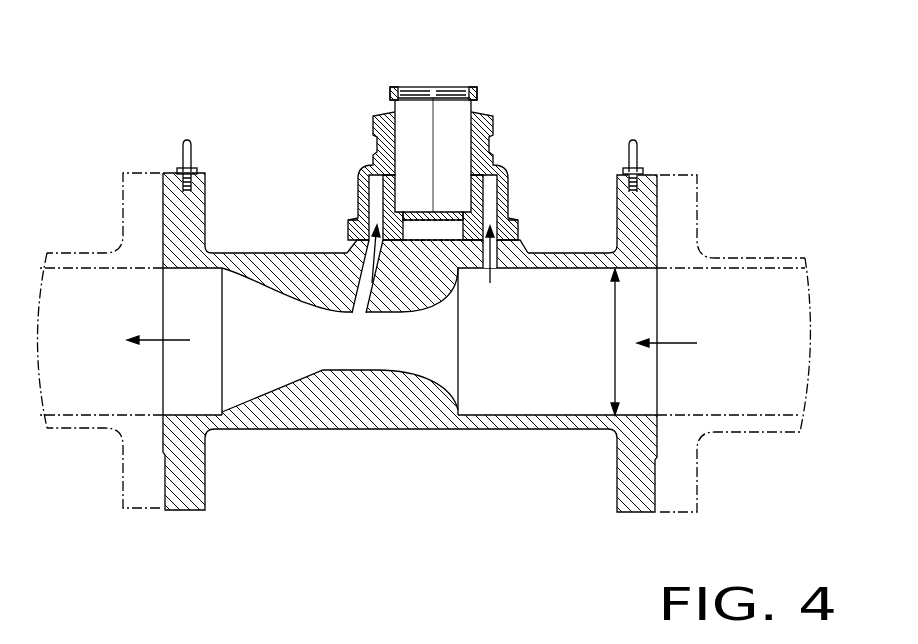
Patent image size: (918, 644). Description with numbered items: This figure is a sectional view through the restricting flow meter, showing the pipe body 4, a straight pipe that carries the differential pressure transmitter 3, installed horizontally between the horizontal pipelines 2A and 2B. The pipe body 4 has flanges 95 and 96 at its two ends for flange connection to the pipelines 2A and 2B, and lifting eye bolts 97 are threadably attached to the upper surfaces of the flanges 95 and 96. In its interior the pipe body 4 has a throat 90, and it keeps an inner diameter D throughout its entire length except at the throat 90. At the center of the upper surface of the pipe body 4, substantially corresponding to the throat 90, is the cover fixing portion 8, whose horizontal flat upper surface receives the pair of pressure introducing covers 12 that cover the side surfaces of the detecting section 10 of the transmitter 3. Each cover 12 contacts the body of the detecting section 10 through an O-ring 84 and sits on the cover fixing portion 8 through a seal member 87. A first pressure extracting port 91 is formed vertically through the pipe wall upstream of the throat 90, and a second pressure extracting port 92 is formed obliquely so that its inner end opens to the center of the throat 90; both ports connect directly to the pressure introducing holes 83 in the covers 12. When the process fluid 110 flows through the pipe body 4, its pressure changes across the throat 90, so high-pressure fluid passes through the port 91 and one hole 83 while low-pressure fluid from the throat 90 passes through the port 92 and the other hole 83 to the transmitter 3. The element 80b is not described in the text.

The pipeline 2A is at (750, 257).
The pipeline 2B is at (70, 250).
The differential pressure transmitter 3 is at (438, 133).
The pipe body 4 is at (530, 432).
The cover fixing portion 8 is at (537, 268).
The detecting section 10 is at (434, 169).
The pressure introducing cover 12 is at (395, 87).
The diaphragm 80b is at (440, 87).
The pressure introducing hole 83 is at (376, 195).
The O-ring 84 is at (390, 108).
The seal member 87 is at (354, 230).
The throat 90 is at (442, 368).
The first pressure extracting port 91 is at (489, 270).
The second pressure extracting port 92 is at (358, 298).
The flange 95 is at (615, 500).
The flange 96 is at (197, 482).
The lifting eye bolt 97 is at (197, 148).
The process fluid 110 is at (690, 345).
The inner diameter D is at (610, 342).